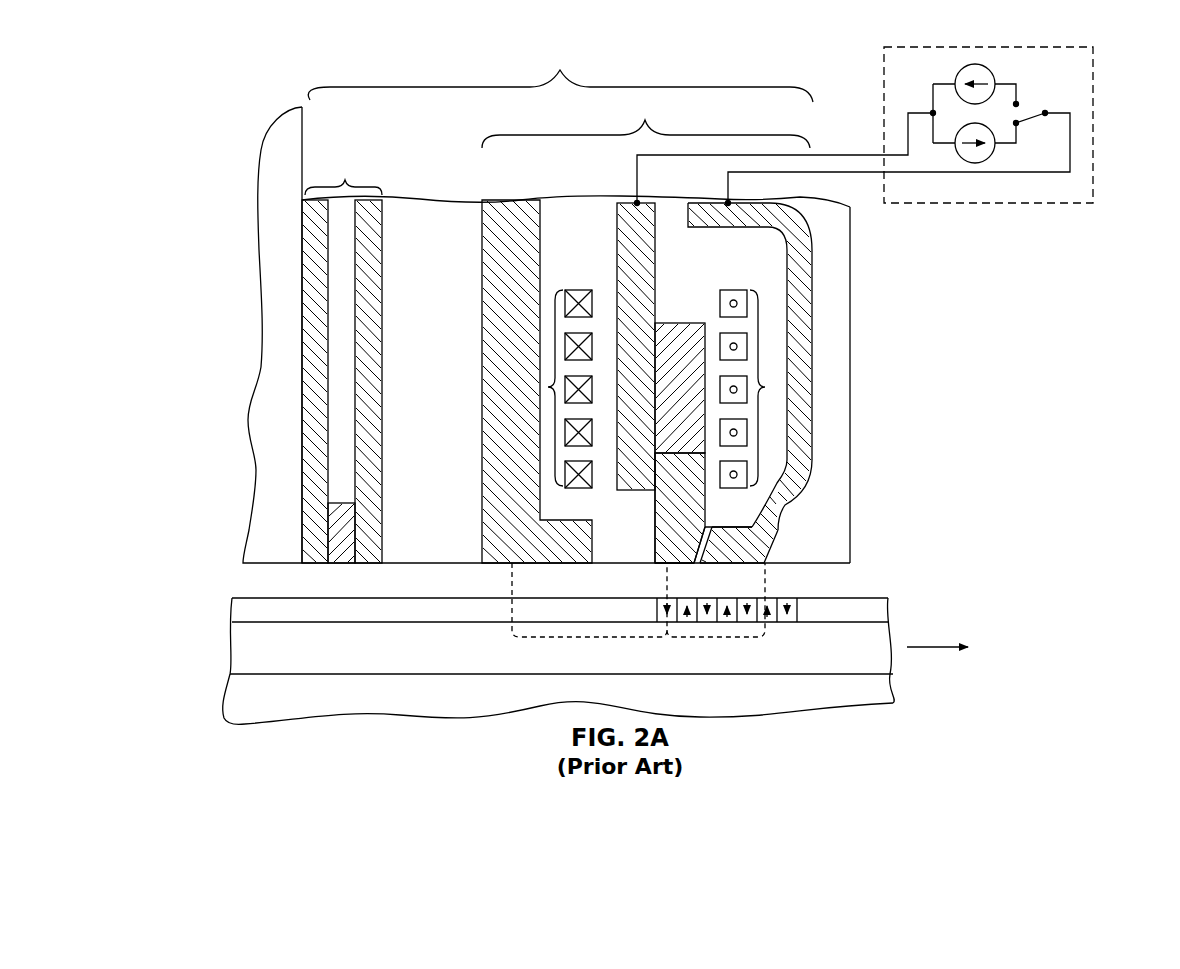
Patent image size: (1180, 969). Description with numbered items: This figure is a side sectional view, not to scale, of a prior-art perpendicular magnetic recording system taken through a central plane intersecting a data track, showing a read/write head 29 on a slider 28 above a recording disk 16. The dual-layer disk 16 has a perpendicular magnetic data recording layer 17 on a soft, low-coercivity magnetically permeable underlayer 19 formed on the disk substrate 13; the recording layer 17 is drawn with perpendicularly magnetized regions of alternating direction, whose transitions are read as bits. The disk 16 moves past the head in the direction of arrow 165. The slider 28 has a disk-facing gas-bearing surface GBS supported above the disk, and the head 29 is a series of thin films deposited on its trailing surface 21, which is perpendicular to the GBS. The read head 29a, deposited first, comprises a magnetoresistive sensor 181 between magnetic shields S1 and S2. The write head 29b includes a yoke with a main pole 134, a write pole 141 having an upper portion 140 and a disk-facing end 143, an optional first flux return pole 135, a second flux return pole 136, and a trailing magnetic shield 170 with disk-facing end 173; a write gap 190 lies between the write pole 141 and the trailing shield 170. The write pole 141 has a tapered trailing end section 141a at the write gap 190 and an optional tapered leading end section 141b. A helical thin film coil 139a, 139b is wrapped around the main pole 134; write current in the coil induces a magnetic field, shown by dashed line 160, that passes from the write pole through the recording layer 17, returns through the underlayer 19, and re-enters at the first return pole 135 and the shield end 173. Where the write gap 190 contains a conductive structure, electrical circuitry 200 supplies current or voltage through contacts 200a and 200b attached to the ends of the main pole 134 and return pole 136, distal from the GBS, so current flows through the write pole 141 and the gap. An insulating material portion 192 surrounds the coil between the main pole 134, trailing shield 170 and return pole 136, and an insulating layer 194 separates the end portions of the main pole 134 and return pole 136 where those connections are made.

The disk substrate 13 is at (893, 692).
The recording disk 16 is at (544, 655).
The perpendicular magnetic data recording layer 17 is at (888, 612).
The soft underlayer 19 is at (888, 642).
The trailing surface 21 is at (305, 131).
The slider 28 is at (262, 160).
The read/write head 29 is at (560, 74).
The read head 29a is at (343, 174).
The write head 29b is at (646, 122).
The main pole 134 is at (630, 262).
The first flux return pole 135 is at (492, 263).
The second flux return pole 136 is at (803, 420).
The thin film coil section 139a is at (553, 387).
The thin film coil section 139b is at (768, 387).
The upper portion of write pole 140 is at (665, 328).
The write pole 141 is at (660, 494).
The tapered trailing end section 141a is at (655, 548).
The tapered leading end section 141b is at (650, 563).
The disk-facing end 143 is at (673, 565).
The magnetic field 160 is at (528, 638).
The arrow 165 is at (945, 645).
The trailing magnetic shield 170 is at (755, 545).
The disk-facing end of trailing shield 173 is at (708, 565).
The magnetoresistive read element 181 is at (345, 565).
The write gap 190 is at (713, 528).
The insulating material portion 192 is at (757, 267).
The electrically insulating material layer 194 is at (672, 212).
The electrical circuitry 200 is at (1097, 127).
The electrical contact 200a is at (637, 203).
The electrical contact 200b is at (728, 203).
The magnetic shield S1 is at (314, 437).
The magnetic shield S2 is at (372, 437).
The gas-bearing surface GBS is at (272, 567).